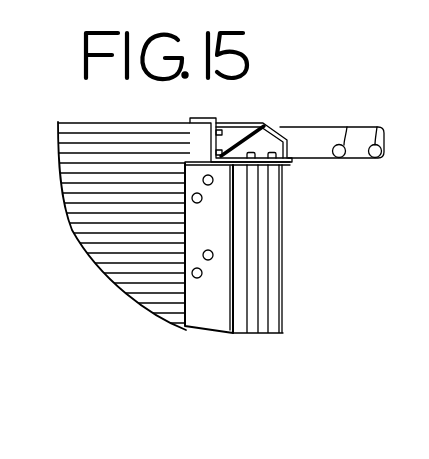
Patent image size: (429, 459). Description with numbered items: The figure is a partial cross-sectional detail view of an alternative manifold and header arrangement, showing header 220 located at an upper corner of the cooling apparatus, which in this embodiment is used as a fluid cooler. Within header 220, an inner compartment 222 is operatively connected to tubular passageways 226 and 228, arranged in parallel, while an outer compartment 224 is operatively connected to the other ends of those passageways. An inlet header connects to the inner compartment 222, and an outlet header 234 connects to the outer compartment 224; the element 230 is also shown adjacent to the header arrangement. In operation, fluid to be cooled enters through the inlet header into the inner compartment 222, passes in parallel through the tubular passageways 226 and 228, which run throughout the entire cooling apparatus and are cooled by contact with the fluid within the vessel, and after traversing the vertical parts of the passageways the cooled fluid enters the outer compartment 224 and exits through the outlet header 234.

The header 220 is at (268, 122).
The inner compartment 222 is at (227, 133).
The outer compartment 224 is at (288, 143).
The tubular passageway 226 is at (137, 130).
The tubular passageway 228 is at (164, 146).
The rail 230 is at (300, 126).
The outlet header 234 is at (358, 126).